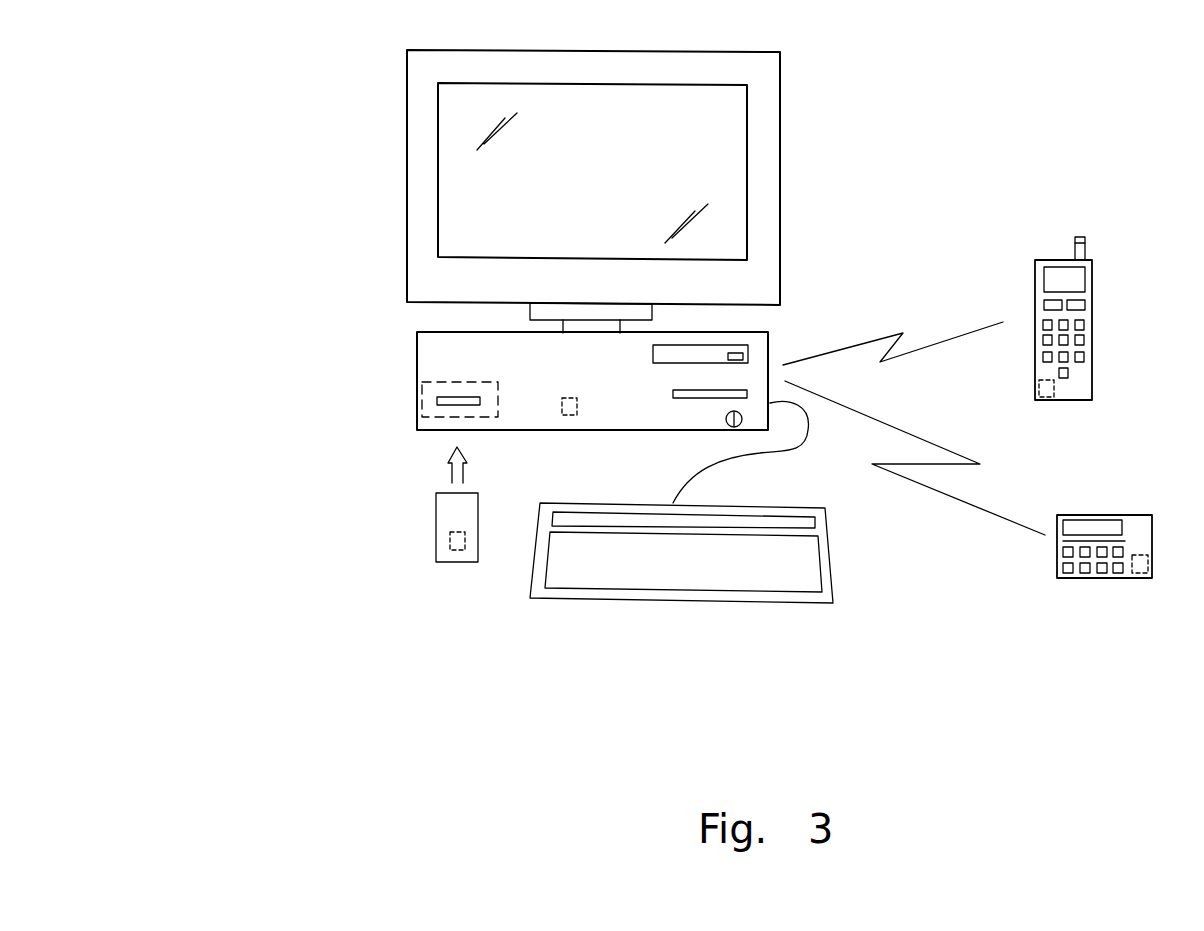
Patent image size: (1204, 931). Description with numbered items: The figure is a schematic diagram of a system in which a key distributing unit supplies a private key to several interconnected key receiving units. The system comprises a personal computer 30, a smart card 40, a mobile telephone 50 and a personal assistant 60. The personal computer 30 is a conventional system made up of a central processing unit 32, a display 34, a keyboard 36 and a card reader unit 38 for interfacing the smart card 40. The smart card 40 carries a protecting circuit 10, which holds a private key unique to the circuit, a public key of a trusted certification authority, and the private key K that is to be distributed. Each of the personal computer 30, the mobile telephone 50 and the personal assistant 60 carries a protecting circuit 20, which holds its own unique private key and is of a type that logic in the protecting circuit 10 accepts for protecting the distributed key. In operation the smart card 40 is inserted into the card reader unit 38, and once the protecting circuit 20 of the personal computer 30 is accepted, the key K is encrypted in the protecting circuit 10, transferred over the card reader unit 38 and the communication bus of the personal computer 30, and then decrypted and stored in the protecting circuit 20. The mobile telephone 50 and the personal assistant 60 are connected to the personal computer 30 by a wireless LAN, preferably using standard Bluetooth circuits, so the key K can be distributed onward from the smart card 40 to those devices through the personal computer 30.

The protecting circuit 10 is at (452, 549).
The protecting circuit 20 is at (563, 417).
The personal computer 30 is at (374, 234).
The central processing unit 32 is at (418, 343).
The display 34 is at (410, 112).
The keyboard 36 is at (678, 598).
The card reader unit 38 is at (420, 407).
The smart card 40 is at (436, 512).
The mobile telephone 50 is at (1093, 368).
The personal assistant 60 is at (1060, 570).